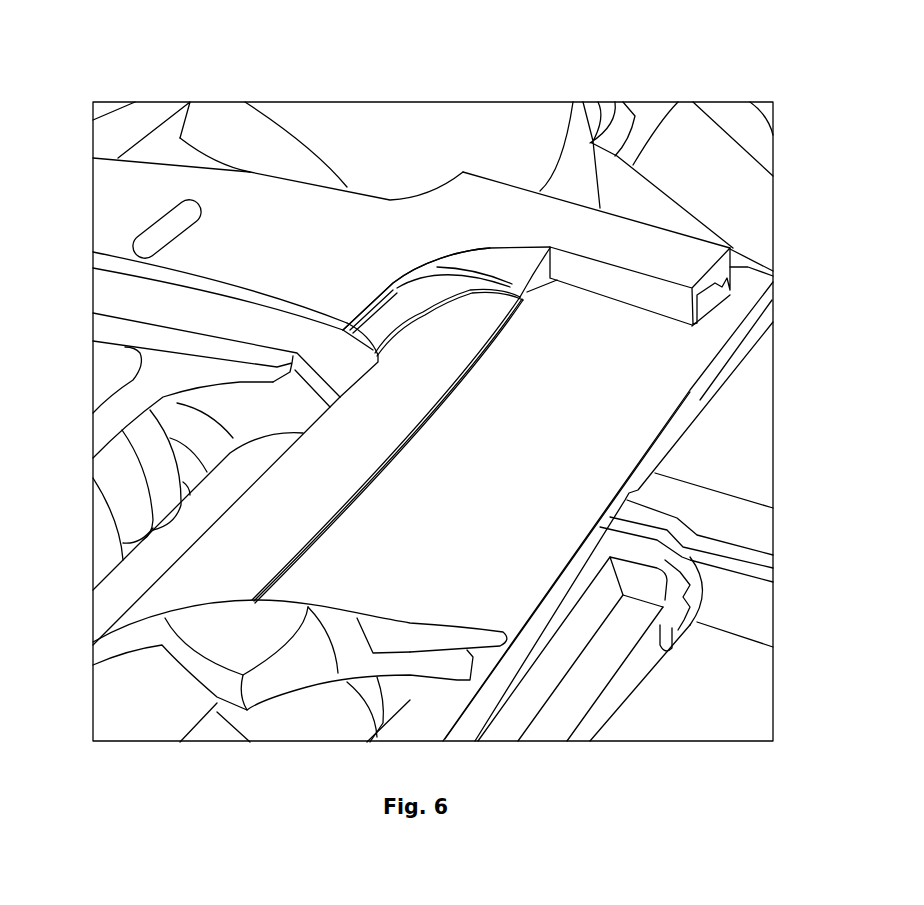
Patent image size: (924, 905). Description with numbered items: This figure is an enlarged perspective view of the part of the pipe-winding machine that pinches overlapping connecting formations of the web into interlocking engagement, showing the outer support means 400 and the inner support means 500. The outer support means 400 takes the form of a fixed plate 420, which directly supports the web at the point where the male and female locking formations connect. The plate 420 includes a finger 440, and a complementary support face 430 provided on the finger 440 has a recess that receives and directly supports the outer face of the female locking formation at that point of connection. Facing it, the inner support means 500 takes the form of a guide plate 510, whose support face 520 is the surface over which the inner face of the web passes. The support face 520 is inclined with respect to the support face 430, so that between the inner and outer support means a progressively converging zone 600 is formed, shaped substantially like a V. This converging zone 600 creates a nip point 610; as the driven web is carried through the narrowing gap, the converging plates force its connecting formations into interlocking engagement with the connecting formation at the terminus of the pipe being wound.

The outer support means 400 is at (329, 268).
The fixed plate 420 is at (423, 258).
The support face 430 is at (729, 285).
The finger 440 is at (637, 238).
The inner support means 500 is at (722, 352).
The guide plate 510 is at (520, 495).
The support face 520 is at (603, 409).
The progressively converging zone 600 is at (498, 305).
The nip point 610 is at (727, 322).